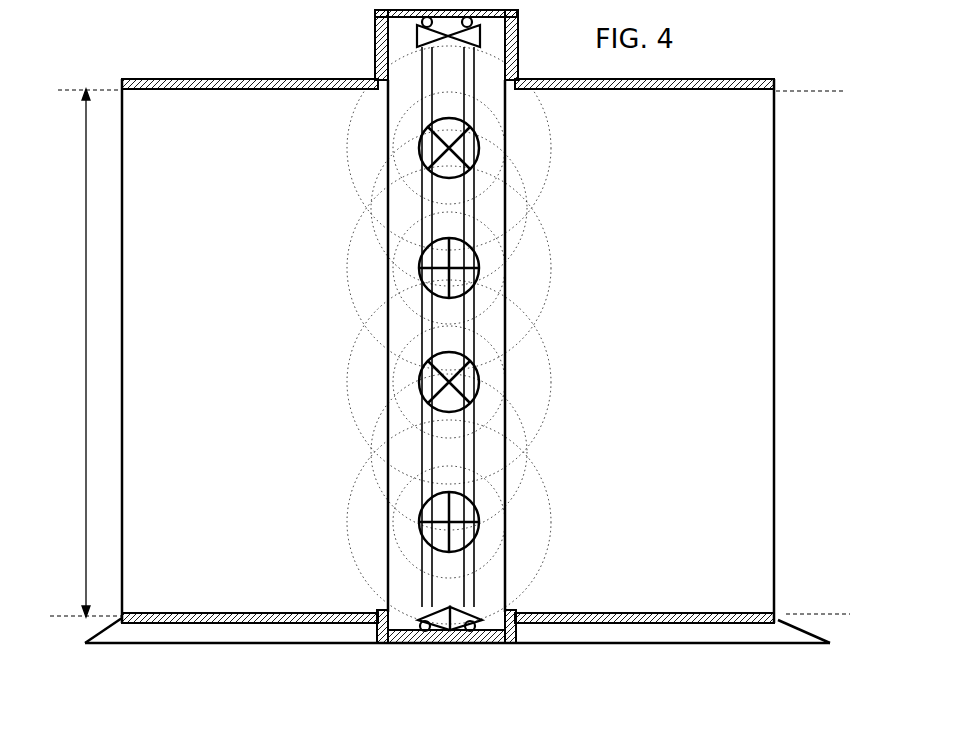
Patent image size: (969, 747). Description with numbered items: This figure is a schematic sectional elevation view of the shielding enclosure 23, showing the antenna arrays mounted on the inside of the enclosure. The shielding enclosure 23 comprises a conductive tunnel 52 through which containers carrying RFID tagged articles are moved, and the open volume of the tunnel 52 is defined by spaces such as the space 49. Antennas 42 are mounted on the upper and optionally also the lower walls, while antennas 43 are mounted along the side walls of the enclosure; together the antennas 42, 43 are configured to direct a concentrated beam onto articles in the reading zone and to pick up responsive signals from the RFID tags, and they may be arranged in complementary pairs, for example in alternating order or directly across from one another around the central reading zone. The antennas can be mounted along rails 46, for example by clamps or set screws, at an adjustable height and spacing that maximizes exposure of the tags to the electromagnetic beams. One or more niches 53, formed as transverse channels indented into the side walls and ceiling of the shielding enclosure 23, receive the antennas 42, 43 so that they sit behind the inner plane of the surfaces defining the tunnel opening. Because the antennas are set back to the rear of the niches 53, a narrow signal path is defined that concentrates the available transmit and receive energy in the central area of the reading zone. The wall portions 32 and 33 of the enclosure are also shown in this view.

The shielding enclosure 23 is at (166, 72).
The tank side wall 32 is at (777, 209).
The distribution column wall 33 is at (492, 50).
The antennas 42 is at (376, 26).
The antennas 43 is at (470, 258).
The rails 46 is at (470, 645).
The space 49 is at (73, 353).
The conductive tunnel 52 is at (231, 506).
The niches 53 is at (414, 0).